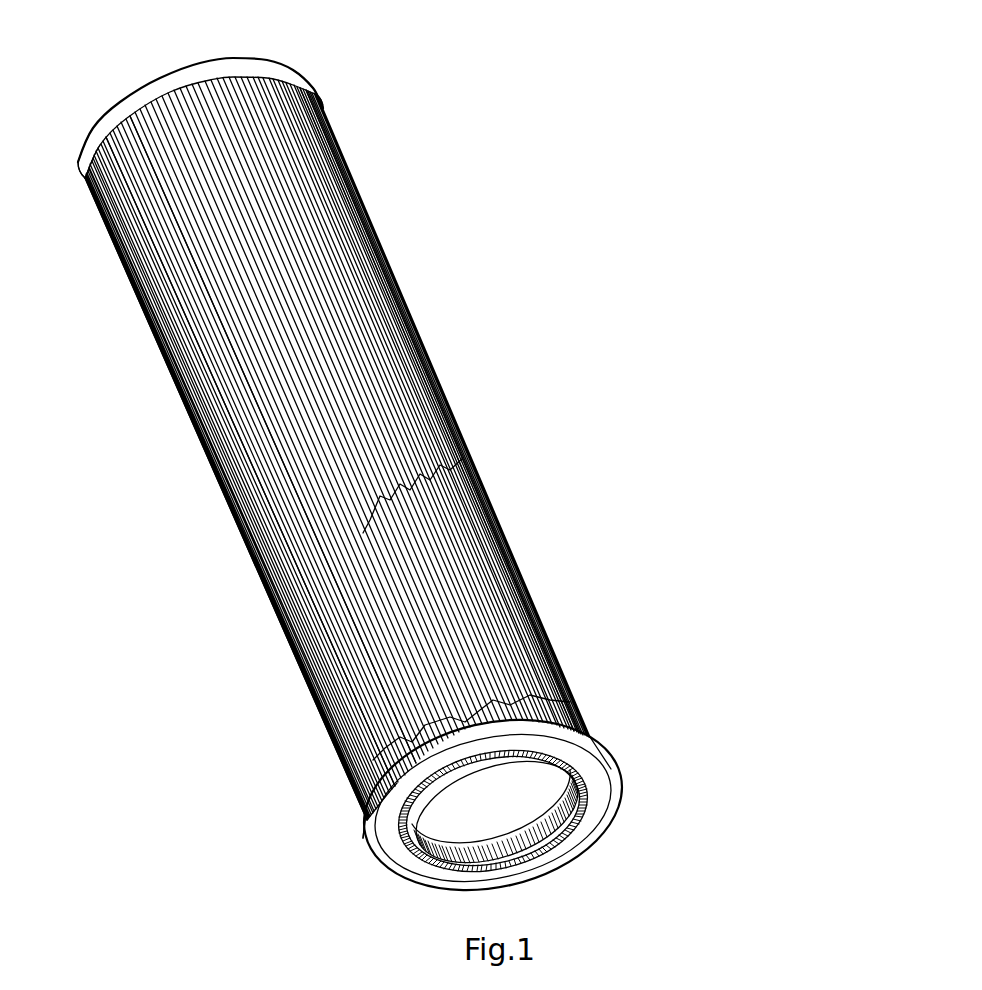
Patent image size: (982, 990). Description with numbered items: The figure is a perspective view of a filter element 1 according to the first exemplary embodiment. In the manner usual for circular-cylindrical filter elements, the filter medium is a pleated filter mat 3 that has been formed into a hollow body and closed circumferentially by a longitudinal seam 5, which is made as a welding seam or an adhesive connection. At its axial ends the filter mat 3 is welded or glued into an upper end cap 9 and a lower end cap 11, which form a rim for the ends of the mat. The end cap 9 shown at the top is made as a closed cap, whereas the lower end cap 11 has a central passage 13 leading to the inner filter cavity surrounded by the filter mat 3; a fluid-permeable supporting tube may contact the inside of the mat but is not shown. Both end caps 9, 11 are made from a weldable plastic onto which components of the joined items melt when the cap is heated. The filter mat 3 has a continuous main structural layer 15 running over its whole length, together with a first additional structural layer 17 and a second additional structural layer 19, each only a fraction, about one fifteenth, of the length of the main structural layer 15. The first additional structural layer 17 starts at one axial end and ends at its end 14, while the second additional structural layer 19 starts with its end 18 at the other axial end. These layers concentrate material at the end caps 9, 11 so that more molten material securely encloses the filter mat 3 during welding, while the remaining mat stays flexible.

The filter element 1 is at (498, 338).
The filter mat 3 is at (250, 450).
The longitudinal seam 5 is at (463, 458).
The end cap 9 is at (127, 102).
The end cap 11 is at (597, 765).
The central passage 13 is at (570, 837).
The end of first additional structural layer 14 is at (323, 105).
The main structural layer 15 is at (348, 277).
The first additional structural layer 17 is at (87, 178).
The end of second additional structural layer 18 is at (530, 693).
The second additional structural layer 19 is at (347, 770).